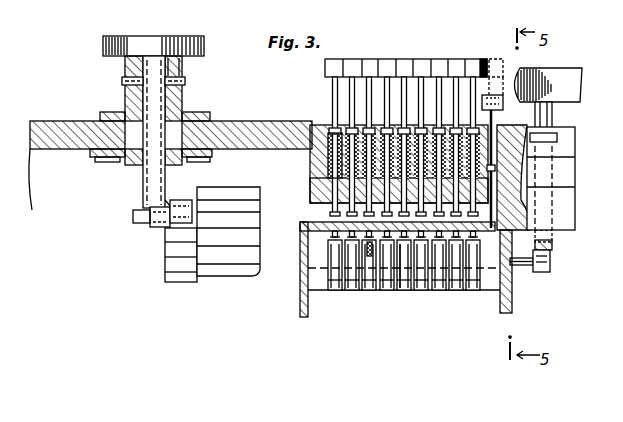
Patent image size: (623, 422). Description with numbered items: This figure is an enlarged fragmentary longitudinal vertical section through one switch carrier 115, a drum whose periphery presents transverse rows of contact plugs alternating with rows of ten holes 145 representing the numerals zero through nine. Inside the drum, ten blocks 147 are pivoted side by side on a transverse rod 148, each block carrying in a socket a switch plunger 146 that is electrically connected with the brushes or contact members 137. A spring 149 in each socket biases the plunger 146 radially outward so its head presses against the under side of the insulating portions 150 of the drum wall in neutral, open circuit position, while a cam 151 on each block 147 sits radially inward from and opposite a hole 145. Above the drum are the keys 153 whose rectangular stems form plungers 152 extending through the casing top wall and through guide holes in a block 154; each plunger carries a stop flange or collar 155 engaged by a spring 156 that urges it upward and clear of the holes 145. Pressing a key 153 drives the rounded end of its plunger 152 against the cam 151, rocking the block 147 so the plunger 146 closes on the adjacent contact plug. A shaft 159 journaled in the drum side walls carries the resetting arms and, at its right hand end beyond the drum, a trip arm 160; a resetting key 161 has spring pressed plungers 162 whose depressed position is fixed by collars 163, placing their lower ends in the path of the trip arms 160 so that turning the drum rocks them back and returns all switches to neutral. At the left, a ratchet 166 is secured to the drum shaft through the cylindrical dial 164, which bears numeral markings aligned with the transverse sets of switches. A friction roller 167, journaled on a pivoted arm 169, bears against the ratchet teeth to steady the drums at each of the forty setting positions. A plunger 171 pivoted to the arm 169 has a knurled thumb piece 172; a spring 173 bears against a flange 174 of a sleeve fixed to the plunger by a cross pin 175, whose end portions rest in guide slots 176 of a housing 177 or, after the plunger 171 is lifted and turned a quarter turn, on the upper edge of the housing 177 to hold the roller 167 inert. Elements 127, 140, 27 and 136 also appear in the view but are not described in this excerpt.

The frame 127 is at (7, 0).
The ratchet 166 is at (48, 0).
The pin 140 is at (187, 6).
The brushes or contact members 137 is at (142, 12).
The base 27 is at (9, 274).
The knurled thumb piece 172 is at (110, 45).
The cross pin 175 is at (123, 81).
The spring 173 is at (125, 113).
The guide slots 176 is at (178, 70).
The housing 177 is at (183, 100).
The flange 174 is at (128, 160).
The plunger 171 is at (152, 182).
The friction roller 167 is at (179, 203).
The arm 169 is at (160, 225).
The cylindrical dial 164 is at (216, 280).
The keys 153 is at (420, 68).
The plungers 152 is at (355, 93).
The stop flange or collar 155 is at (338, 132).
The spring 156 is at (312, 162).
The block 154 is at (312, 185).
The insulating portions 150 is at (322, 226).
The switch plungers 146 is at (302, 232).
The block 147 is at (312, 252).
The transverse rod 148 is at (312, 270).
The switch carrier 115 is at (302, 305).
The spring 149 is at (372, 258).
The cam 151 is at (402, 250).
The holes 145 is at (476, 226).
The right wall 136 is at (520, 271).
The resetting key 161 is at (562, 76).
The spring pressed plungers 162 is at (552, 118).
The collars 163 is at (560, 141).
The trip arm 160 is at (550, 272).
The shaft 159 is at (522, 266).